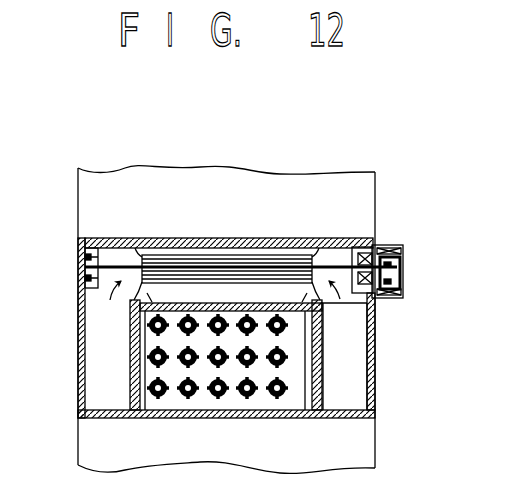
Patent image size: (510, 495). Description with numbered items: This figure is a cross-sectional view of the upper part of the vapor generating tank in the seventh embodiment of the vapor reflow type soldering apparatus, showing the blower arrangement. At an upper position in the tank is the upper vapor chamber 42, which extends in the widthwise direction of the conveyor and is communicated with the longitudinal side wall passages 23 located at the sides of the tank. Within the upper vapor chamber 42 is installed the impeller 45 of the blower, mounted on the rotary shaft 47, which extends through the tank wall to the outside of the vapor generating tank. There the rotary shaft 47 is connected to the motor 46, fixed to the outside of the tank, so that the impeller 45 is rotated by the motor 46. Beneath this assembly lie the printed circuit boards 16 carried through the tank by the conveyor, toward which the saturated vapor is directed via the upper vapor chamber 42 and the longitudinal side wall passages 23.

The printed circuit boards 16 is at (147, 400).
The longitudinal side wall passages 23 is at (355, 362).
The upper vapor chamber 42 is at (130, 312).
The impeller 45 is at (273, 256).
The motor 46 is at (395, 245).
The rotary shaft 47 is at (338, 298).